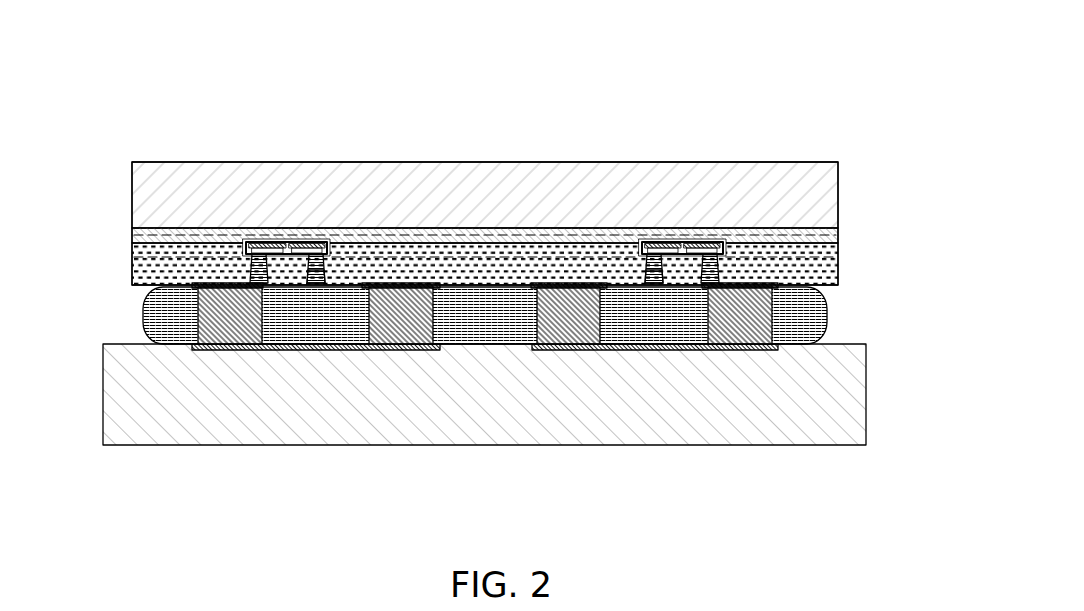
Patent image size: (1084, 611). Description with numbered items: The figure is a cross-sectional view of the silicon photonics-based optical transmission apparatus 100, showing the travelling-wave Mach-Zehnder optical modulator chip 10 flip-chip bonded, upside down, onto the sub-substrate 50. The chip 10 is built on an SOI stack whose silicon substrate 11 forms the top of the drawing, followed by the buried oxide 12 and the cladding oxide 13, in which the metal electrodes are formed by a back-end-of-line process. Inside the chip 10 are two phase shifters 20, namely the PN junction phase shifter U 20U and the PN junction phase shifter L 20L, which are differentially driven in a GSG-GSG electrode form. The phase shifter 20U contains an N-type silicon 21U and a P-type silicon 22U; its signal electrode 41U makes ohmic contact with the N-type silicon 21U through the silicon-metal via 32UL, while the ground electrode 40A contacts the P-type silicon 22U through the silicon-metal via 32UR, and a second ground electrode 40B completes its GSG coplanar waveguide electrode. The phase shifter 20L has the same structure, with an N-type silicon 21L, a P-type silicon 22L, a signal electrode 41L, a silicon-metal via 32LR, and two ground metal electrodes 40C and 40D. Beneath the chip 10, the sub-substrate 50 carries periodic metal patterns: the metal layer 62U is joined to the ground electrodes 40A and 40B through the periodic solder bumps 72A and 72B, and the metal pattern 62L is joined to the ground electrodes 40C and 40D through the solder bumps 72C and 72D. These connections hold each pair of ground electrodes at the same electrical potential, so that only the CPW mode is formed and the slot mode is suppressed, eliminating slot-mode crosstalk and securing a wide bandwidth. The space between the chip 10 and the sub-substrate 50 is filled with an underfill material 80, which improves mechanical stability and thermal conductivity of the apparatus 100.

The silicon photonics-based optical transmission apparatus 100 is at (853, 72).
The travelling-wave Mach-Zehnder optical modulator chip 10 is at (474, 213).
The silicon substrate 11 is at (132, 195).
The buried oxide 12 is at (132, 236).
The cladding oxide 13 is at (132, 279).
The phase shifter 20 is at (486, 234).
The PN junction phase shifter L 20L is at (228, 303).
The PN junction phase shifter U 20U is at (746, 303).
The N-type silicon 21L is at (267, 243).
The P-type silicon 22L is at (307, 243).
The N-type silicon 21U is at (663, 243).
The P-type silicon 22U is at (702, 243).
The silicon-metal via 32LR is at (322, 254).
The silicon-metal via 32UL is at (648, 262).
The silicon-metal via 32UR is at (712, 263).
The signal electrode 41L is at (320, 280).
The signal electrode 41U is at (660, 284).
The ground electrode 40A is at (748, 288).
The ground electrode 40B is at (552, 283).
The ground metal electrode 40C is at (407, 283).
The ground metal electrode 40D is at (192, 286).
The periodic metal pattern 62L is at (308, 350).
The metal layer 62U is at (655, 350).
The periodic solder bump 72A is at (737, 338).
The periodic solder bump 72B is at (570, 338).
The periodic solder bump 72C is at (402, 338).
The periodic solder bump 72D is at (232, 338).
The underfill material 80 is at (152, 322).
The sub-substrate 50 is at (866, 396).